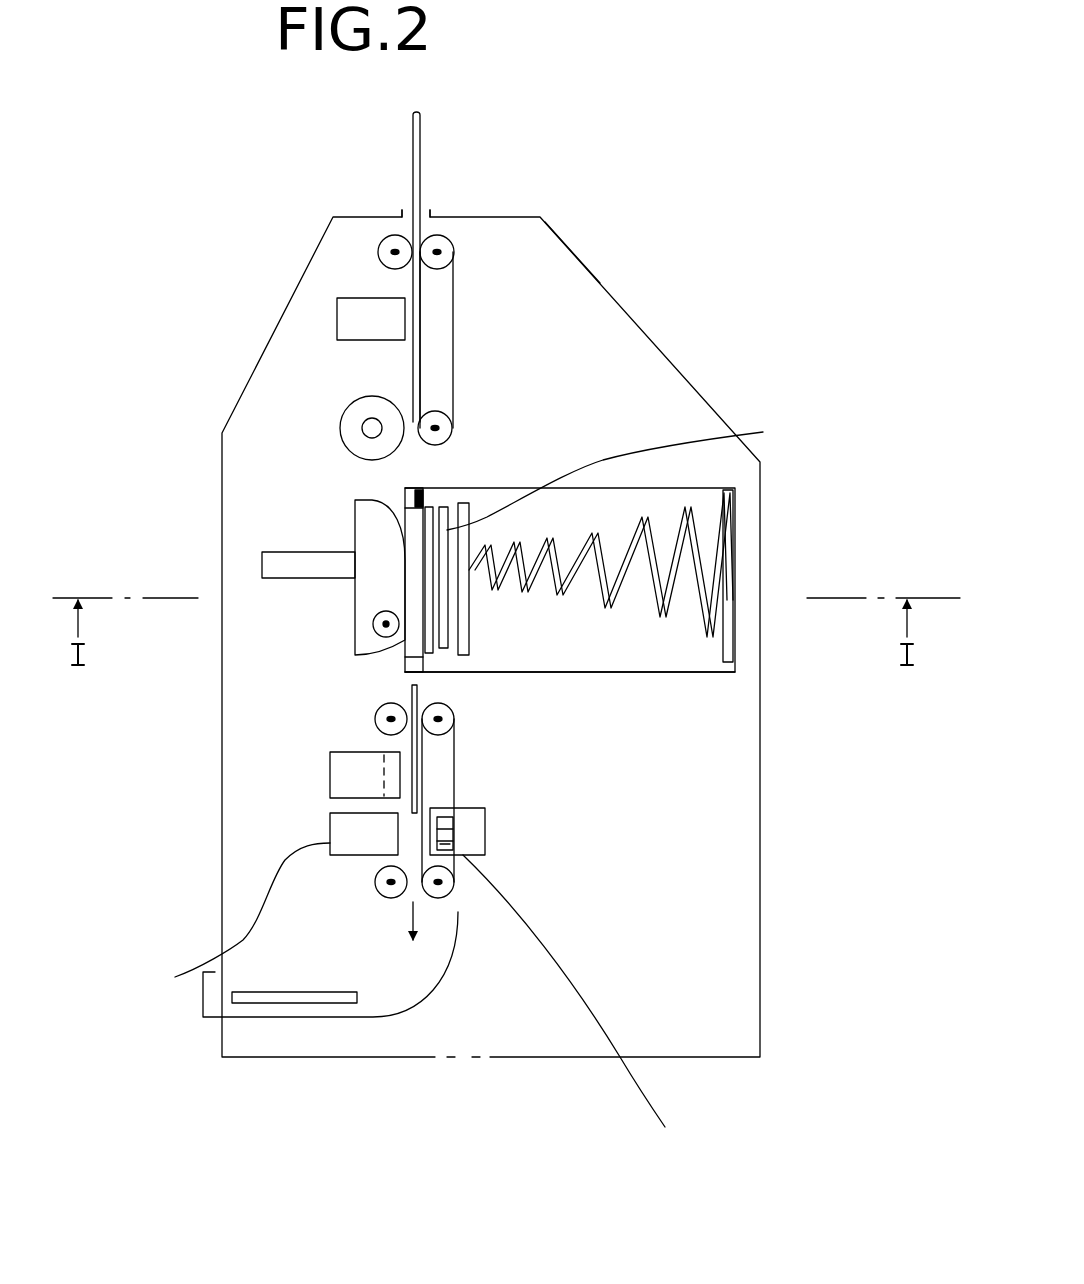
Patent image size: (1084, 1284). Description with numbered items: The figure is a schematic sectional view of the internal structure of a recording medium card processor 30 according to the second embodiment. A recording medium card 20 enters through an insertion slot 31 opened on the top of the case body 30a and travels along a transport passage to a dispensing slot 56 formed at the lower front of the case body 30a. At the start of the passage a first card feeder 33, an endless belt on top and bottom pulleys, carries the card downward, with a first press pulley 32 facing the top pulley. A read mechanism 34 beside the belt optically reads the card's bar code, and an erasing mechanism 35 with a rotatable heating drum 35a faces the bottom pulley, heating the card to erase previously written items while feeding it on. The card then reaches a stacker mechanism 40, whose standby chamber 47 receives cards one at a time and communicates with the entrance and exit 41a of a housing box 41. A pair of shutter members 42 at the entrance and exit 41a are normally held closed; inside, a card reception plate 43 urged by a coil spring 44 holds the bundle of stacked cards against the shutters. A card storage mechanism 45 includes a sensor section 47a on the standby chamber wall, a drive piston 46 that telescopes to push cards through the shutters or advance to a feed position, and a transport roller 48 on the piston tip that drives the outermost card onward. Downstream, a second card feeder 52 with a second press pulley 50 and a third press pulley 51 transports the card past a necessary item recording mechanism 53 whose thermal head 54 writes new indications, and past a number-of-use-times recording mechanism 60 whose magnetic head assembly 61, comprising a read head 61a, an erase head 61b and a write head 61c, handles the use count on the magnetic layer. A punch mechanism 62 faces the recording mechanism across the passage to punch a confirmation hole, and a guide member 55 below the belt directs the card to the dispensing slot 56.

The recording medium card 20 is at (421, 134).
The recording medium card processor 30 is at (546, 188).
The case body 30a is at (568, 240).
The insertion slot 31 is at (410, 207).
The first press pulley 32 is at (378, 252).
The first card feeder 33 is at (446, 355).
The read mechanism 34 is at (343, 320).
The erasing mechanism 35 is at (341, 424).
The heating drum 35a is at (354, 440).
The stacker mechanism 40 is at (580, 676).
The housing box 41 is at (650, 672).
The entrance and exit 41a is at (405, 652).
The shutter member 42 is at (430, 505).
The card reception plate 43 is at (470, 537).
The coil spring 44 is at (653, 558).
The card storage mechanism 45 is at (328, 497).
The drive piston 46 is at (367, 533).
The standby chamber 47 is at (417, 572).
The sensor section 47a is at (410, 487).
The transport roller 48 is at (374, 634).
The second press pulley 50 is at (375, 720).
The third press pulley 51 is at (378, 890).
The second card feeder 52 is at (453, 795).
The necessary item recording mechanism 53 is at (330, 770).
The thermal head 54 is at (380, 763).
The guide member 55 is at (457, 912).
The dispensing slot 56 is at (203, 985).
The number-of-use-times recording mechanism 60 is at (586, 1012).
The magnetic head assembly 61 is at (445, 800).
The read head 61a is at (485, 823).
The erase head 61b is at (485, 833).
The write head 61c is at (485, 845).
The punch mechanism 62 is at (233, 922).